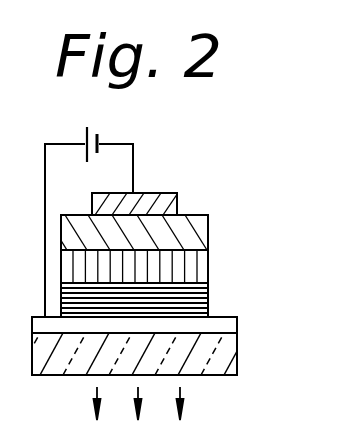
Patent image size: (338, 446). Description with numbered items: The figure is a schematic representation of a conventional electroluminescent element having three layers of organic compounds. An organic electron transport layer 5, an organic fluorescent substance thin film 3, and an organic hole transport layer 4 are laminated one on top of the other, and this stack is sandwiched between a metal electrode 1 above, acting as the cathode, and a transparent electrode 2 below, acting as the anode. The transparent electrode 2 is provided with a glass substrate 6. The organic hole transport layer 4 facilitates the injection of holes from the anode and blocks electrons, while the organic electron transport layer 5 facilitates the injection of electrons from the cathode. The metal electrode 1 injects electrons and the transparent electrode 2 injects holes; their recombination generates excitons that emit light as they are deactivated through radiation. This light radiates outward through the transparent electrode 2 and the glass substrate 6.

The metal electrode 1 is at (177, 203).
The organic electron transport layer 5 is at (208, 229).
The organic fluorescent substance thin film 3 is at (208, 267).
The organic hole transport layer 4 is at (208, 302).
The transparent electrode 2 is at (237, 322).
The glass substrate 6 is at (238, 355).